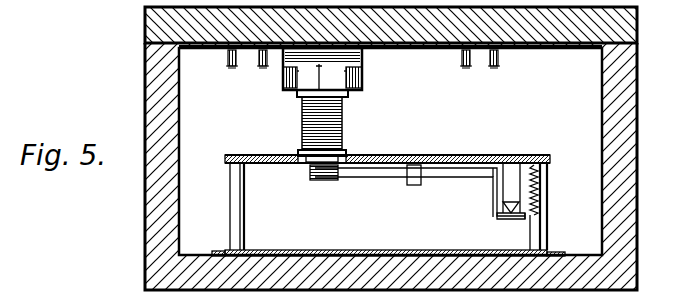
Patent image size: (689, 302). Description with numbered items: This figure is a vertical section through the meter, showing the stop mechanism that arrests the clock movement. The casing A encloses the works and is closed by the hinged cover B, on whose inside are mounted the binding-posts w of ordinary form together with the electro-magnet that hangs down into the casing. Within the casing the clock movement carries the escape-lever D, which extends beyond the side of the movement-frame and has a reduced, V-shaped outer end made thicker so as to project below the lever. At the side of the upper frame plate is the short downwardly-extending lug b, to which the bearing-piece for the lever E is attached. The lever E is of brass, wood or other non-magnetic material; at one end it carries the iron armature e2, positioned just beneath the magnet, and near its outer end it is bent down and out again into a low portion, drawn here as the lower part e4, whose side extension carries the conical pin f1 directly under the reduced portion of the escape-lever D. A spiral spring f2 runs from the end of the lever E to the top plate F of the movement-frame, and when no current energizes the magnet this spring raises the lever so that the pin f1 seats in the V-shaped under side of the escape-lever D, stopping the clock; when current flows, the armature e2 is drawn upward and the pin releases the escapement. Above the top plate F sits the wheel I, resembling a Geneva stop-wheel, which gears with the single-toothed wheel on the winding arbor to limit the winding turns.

The casing A is at (145, 206).
The hinged cover B is at (391, 26).
The binding-post w is at (361, 60).
The wheel I is at (322, 105).
The top plate F is at (464, 156).
The lever E is at (450, 178).
The iron armature e2 is at (308, 173).
The lug b is at (413, 186).
The escape-lever D is at (511, 203).
The foot of rod e4 is at (503, 218).
The conical pin f1 is at (522, 219).
The spiral spring f2 is at (540, 186).